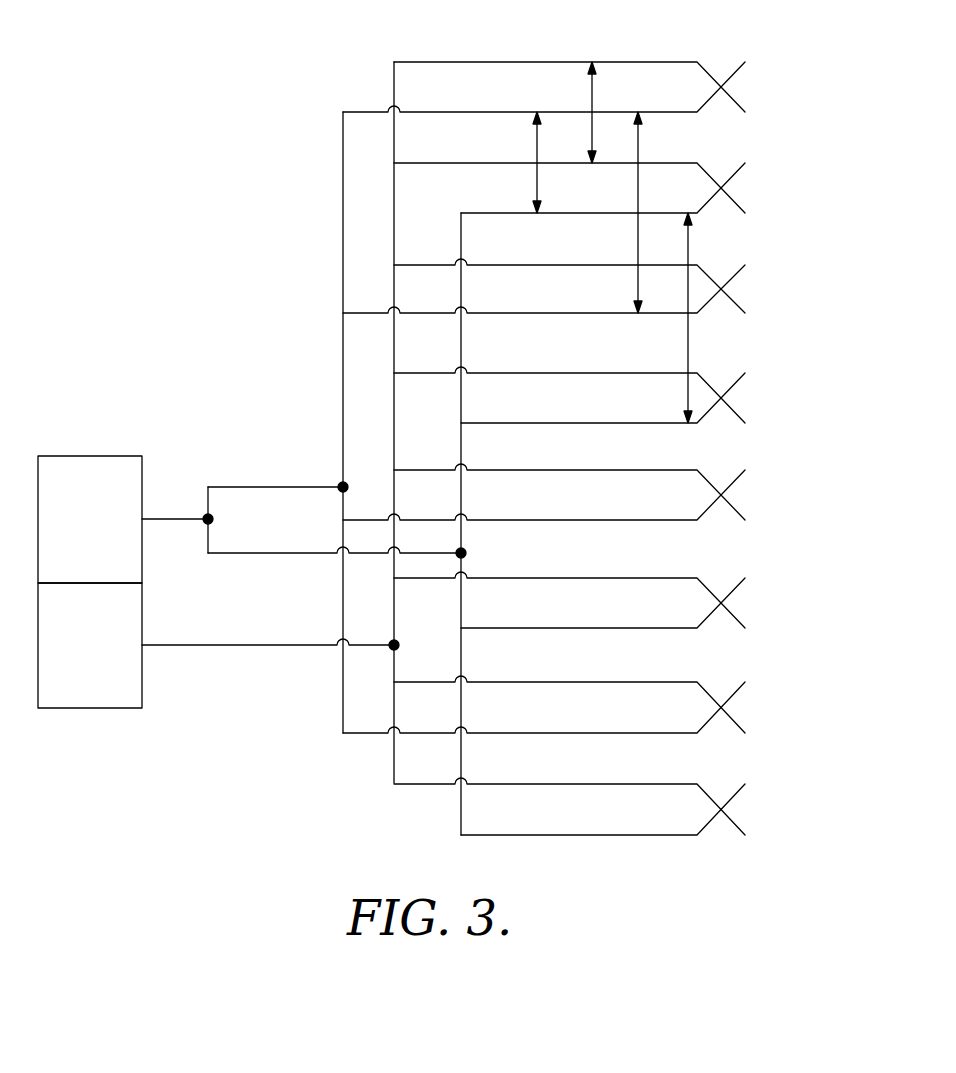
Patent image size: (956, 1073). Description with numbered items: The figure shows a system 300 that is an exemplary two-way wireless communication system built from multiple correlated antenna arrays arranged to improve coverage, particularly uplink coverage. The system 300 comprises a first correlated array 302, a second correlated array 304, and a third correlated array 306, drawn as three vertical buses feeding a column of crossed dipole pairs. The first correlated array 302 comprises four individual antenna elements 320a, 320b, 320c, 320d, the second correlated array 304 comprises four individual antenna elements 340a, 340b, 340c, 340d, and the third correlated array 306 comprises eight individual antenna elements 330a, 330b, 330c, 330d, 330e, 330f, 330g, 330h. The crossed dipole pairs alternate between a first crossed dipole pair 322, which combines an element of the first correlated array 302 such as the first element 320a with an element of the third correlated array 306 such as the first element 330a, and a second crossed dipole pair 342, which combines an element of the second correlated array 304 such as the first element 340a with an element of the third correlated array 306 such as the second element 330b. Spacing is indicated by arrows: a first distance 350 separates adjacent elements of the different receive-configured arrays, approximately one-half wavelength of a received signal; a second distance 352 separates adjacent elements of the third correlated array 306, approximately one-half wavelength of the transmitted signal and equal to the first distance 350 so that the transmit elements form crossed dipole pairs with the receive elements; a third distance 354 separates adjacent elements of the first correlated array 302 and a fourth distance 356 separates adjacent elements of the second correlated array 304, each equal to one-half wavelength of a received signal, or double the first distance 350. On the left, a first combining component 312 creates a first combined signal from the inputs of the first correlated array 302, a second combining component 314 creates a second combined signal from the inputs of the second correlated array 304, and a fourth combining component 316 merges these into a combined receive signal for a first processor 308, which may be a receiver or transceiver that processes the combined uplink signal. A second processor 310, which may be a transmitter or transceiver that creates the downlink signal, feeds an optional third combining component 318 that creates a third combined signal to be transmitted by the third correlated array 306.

The system 300 is at (118, 191).
The first correlated array 302 is at (330, 123).
The second correlated array 304 is at (445, 217).
The third correlated array 306 is at (375, 66).
The first processor 308 is at (85, 456).
The second processor 310 is at (86, 708).
The first combining component 312 is at (340, 483).
The second combining component 314 is at (466, 550).
The fourth combining component 316 is at (204, 522).
The third combining component 318 is at (398, 645).
The first element of the first correlated array 320a is at (742, 59).
The antenna element of the first correlated array 320b is at (742, 262).
The antenna element of the first correlated array 320c is at (742, 467).
The antenna element of the first correlated array 320d is at (742, 679).
The first crossed dipole pair 322 is at (725, 50).
The first element of the third correlated array 330a is at (744, 113).
The second element of the third correlated array 330b is at (744, 214).
The antenna element of the third correlated array 330c is at (744, 314).
The antenna element of the third correlated array 330d is at (744, 424).
The antenna element of the third correlated array 330e is at (744, 521).
The antenna element of the third correlated array 330f is at (744, 629).
The antenna element of the third correlated array 330g is at (744, 734).
The antenna element of the third correlated array 330h is at (744, 835).
The first element of the second correlated array 340a is at (742, 160).
The antenna element of the second correlated array 340b is at (742, 370).
The antenna element of the second correlated array 340c is at (742, 575).
The antenna element of the second correlated array 340d is at (742, 781).
The second crossed dipole pair 342 is at (730, 153).
The first distance 350 is at (535, 147).
The second distance 352 is at (590, 94).
The third distance 354 is at (641, 147).
The fourth distance 356 is at (690, 337).